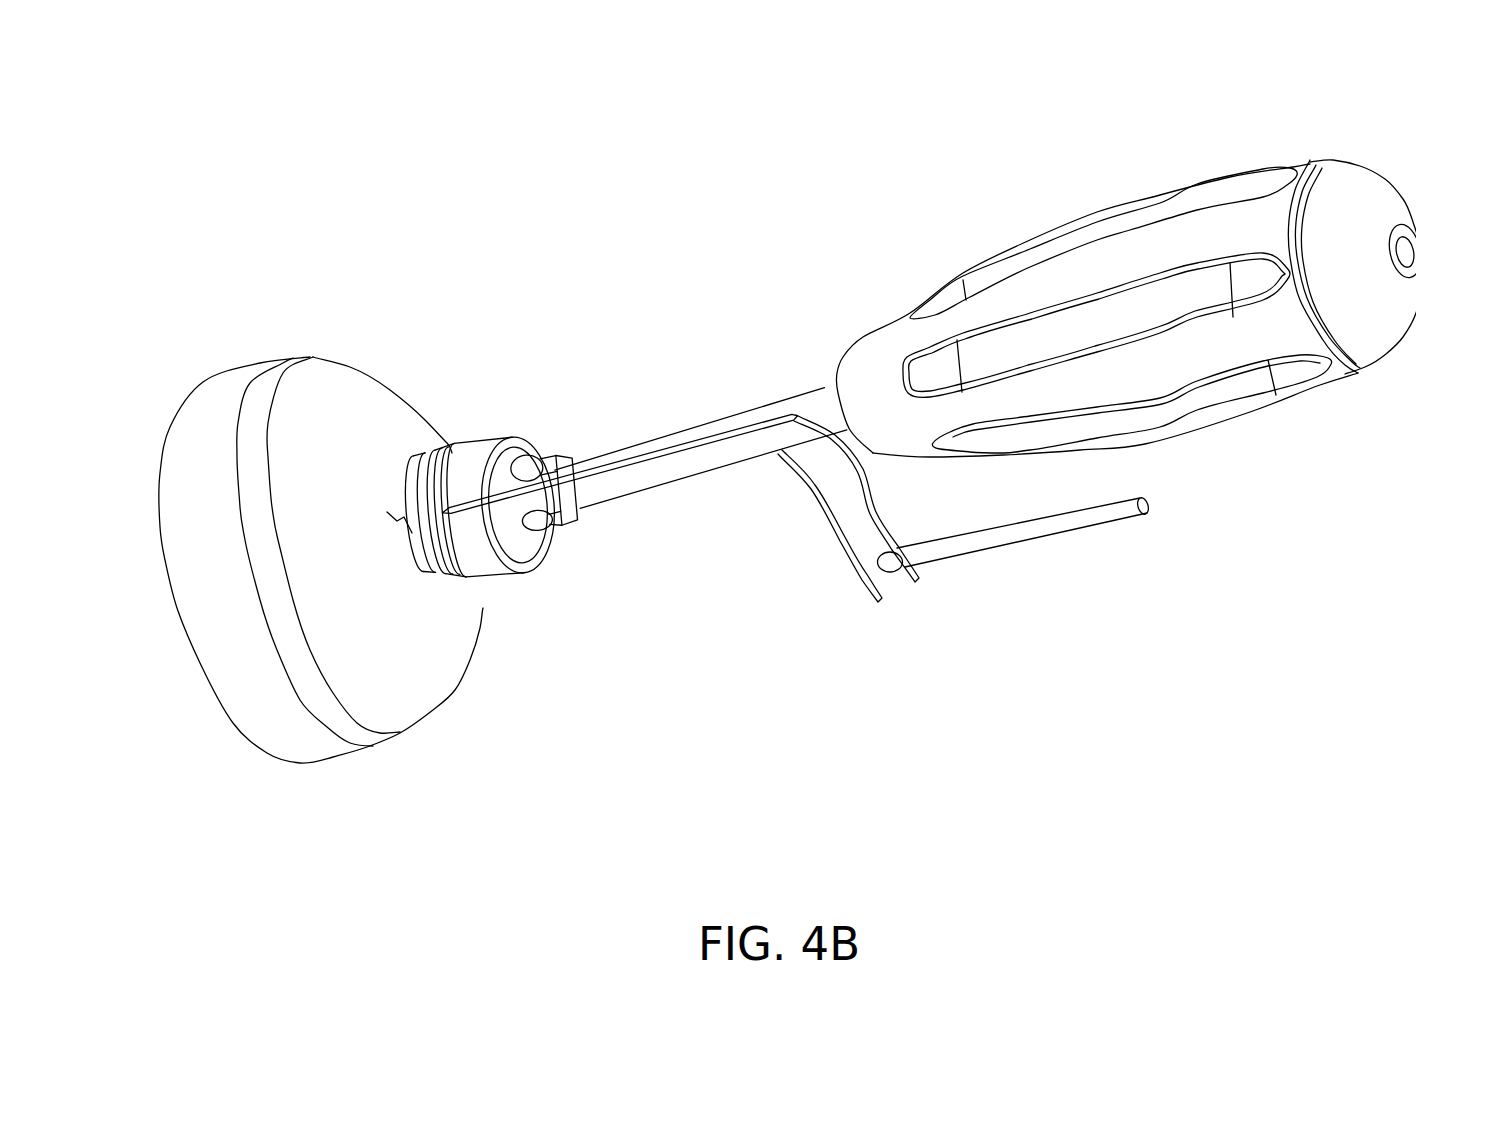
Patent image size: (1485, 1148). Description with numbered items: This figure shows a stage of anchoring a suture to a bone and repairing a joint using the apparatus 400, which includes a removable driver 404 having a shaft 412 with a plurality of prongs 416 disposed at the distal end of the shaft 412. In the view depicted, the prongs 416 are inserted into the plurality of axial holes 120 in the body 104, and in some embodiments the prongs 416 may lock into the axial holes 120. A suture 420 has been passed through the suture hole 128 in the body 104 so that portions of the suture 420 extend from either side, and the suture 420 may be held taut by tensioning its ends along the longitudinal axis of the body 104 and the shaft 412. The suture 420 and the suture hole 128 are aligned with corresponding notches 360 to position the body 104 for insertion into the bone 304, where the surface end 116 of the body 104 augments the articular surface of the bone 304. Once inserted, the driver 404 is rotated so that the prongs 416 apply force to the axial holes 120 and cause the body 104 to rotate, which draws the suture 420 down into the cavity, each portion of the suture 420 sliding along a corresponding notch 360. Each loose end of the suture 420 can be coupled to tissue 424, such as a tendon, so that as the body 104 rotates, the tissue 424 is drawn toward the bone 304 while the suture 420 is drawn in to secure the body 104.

The apparatus 400 is at (224, 106).
The removable driver 404 is at (1258, 166).
The shaft 412 is at (823, 395).
The suture 420 is at (683, 455).
The tissue 424 is at (1077, 528).
The prongs 416 is at (533, 457).
The surface end 116 is at (520, 447).
The axial holes 120 is at (552, 535).
The body 104 is at (517, 567).
The suture hole 128 is at (481, 590).
The notches 360 is at (397, 517).
The bone 304 is at (423, 670).